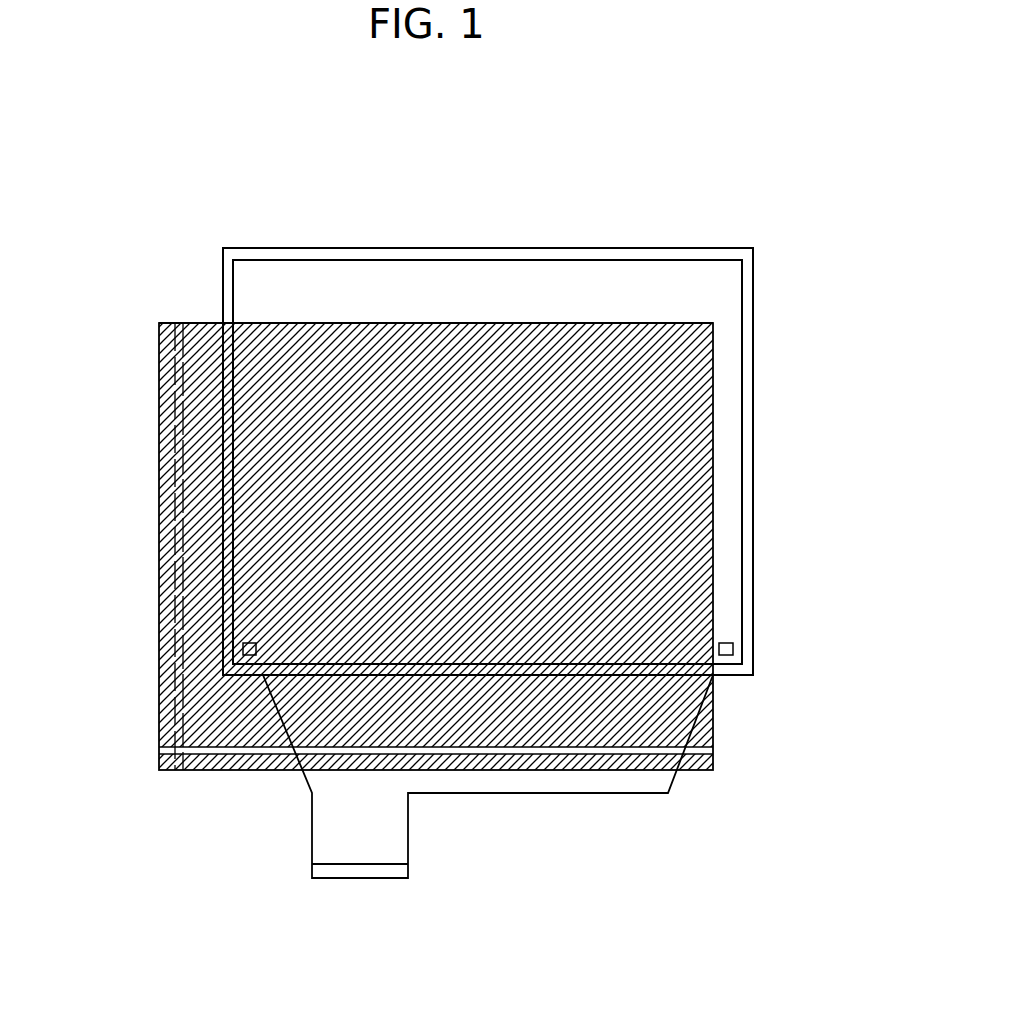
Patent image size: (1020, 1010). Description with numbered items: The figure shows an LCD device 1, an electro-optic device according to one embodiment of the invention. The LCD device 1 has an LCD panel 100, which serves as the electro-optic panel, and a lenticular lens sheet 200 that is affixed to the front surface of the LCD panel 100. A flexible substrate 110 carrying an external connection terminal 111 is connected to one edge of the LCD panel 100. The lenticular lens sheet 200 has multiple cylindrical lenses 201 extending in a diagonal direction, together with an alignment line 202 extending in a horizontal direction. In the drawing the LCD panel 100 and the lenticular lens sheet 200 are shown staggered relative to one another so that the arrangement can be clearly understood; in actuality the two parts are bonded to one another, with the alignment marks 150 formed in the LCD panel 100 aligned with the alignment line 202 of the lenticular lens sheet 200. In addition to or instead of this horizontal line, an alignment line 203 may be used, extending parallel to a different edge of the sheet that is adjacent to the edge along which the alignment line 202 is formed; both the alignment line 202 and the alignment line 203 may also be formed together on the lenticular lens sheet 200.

The LCD device 1 is at (742, 237).
The LCD panel 100 is at (746, 340).
The flexible substrate 110 is at (528, 783).
The external connection terminal 111 is at (360, 871).
The alignment marks 150 is at (243, 650).
The lenticular lens sheet 200 is at (165, 503).
The cylindrical lenses 201 is at (384, 323).
The alignment line 202 is at (705, 750).
The alignment line 203 is at (178, 323).